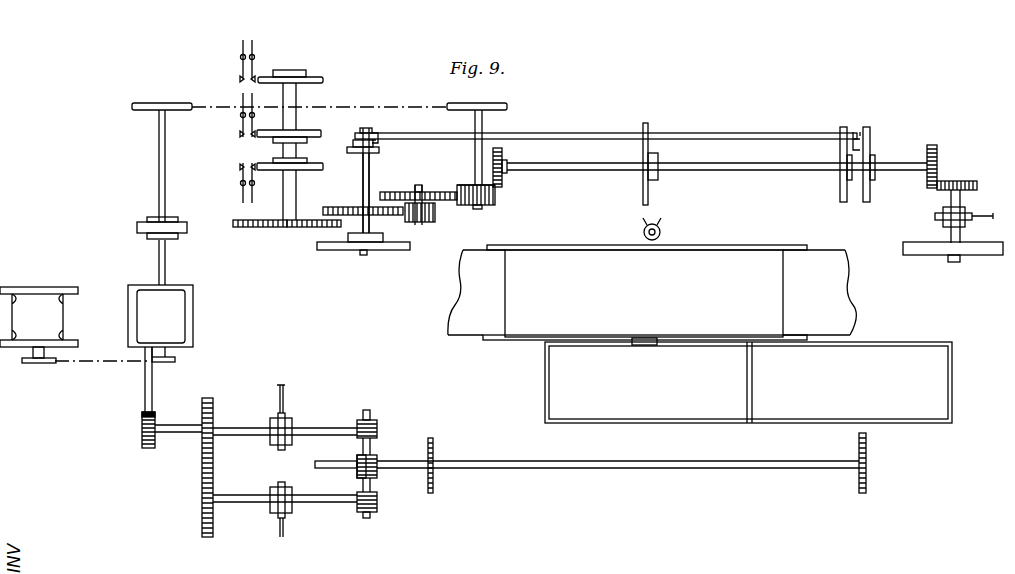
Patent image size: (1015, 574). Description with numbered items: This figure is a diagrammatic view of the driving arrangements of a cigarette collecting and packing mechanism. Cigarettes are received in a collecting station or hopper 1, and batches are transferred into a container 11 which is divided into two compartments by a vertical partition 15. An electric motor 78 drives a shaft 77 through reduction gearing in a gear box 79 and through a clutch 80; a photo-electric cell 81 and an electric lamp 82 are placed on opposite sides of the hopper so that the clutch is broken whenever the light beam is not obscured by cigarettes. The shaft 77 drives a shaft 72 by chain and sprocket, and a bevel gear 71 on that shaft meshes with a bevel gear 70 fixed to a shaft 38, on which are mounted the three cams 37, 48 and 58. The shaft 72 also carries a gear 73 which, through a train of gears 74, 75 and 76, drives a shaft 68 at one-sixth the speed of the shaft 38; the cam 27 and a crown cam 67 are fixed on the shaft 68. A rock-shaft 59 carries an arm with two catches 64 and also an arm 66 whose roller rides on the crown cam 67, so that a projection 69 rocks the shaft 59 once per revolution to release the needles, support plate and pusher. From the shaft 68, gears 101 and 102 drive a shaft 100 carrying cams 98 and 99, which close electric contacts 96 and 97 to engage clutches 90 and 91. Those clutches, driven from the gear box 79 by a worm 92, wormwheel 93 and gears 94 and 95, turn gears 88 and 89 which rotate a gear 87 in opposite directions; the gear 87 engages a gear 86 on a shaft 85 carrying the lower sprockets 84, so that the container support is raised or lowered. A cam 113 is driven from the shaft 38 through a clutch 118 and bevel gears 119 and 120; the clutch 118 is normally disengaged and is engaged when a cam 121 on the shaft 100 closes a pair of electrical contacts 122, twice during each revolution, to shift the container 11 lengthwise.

The collecting station or hopper 1 is at (672, 272).
The container 11 is at (668, 418).
The vertical partition 15 is at (747, 367).
The cam 27 is at (326, 252).
The cam 37 is at (841, 182).
The shaft 38 is at (726, 168).
The cam 48 is at (867, 202).
The cam 58 is at (647, 128).
The rock-shaft 59 is at (718, 133).
The catches 64 is at (842, 150).
The arm 66 is at (378, 138).
The crown cam 67 is at (360, 153).
The shaft 68 is at (365, 177).
The projection 69 is at (367, 173).
The bevel gear 70 is at (503, 152).
The bevel gear 71 is at (462, 180).
The shaft 72 is at (475, 123).
The gear 73 is at (497, 196).
The gear 74 is at (432, 191).
The gear 75 is at (434, 213).
The gear 76 is at (328, 207).
The shaft 77 is at (159, 139).
The electric motor 78 is at (40, 288).
The gear box 79 is at (145, 298).
The clutch 80 is at (137, 226).
The photo-electric cell 81 is at (640, 345).
The electric lamp 82 is at (643, 230).
The sprockets 84 is at (433, 451).
The shaft 85 is at (594, 465).
The gear 86 is at (376, 460).
The gear 87 is at (357, 458).
The gear 88 is at (358, 422).
The gear 89 is at (358, 504).
The clutch 90 is at (278, 417).
The clutch 91 is at (280, 481).
The worm 92 is at (142, 422).
The wormwheel 93 is at (148, 447).
The gear 94 is at (202, 438).
The gear 95 is at (202, 498).
The electric contacts 96 is at (241, 125).
The electric contacts 97 is at (241, 176).
The cam 98 is at (312, 130).
The cam 99 is at (331, 160).
The shaft 100 is at (287, 200).
The gear 101 is at (257, 229).
The gear 102 is at (334, 229).
The cam 113 is at (920, 234).
The clutch 118 is at (943, 217).
The bevel gear 119 is at (938, 152).
The bevel gear 120 is at (963, 176).
The cam 121 is at (294, 88).
The electrical contacts 122 is at (241, 68).